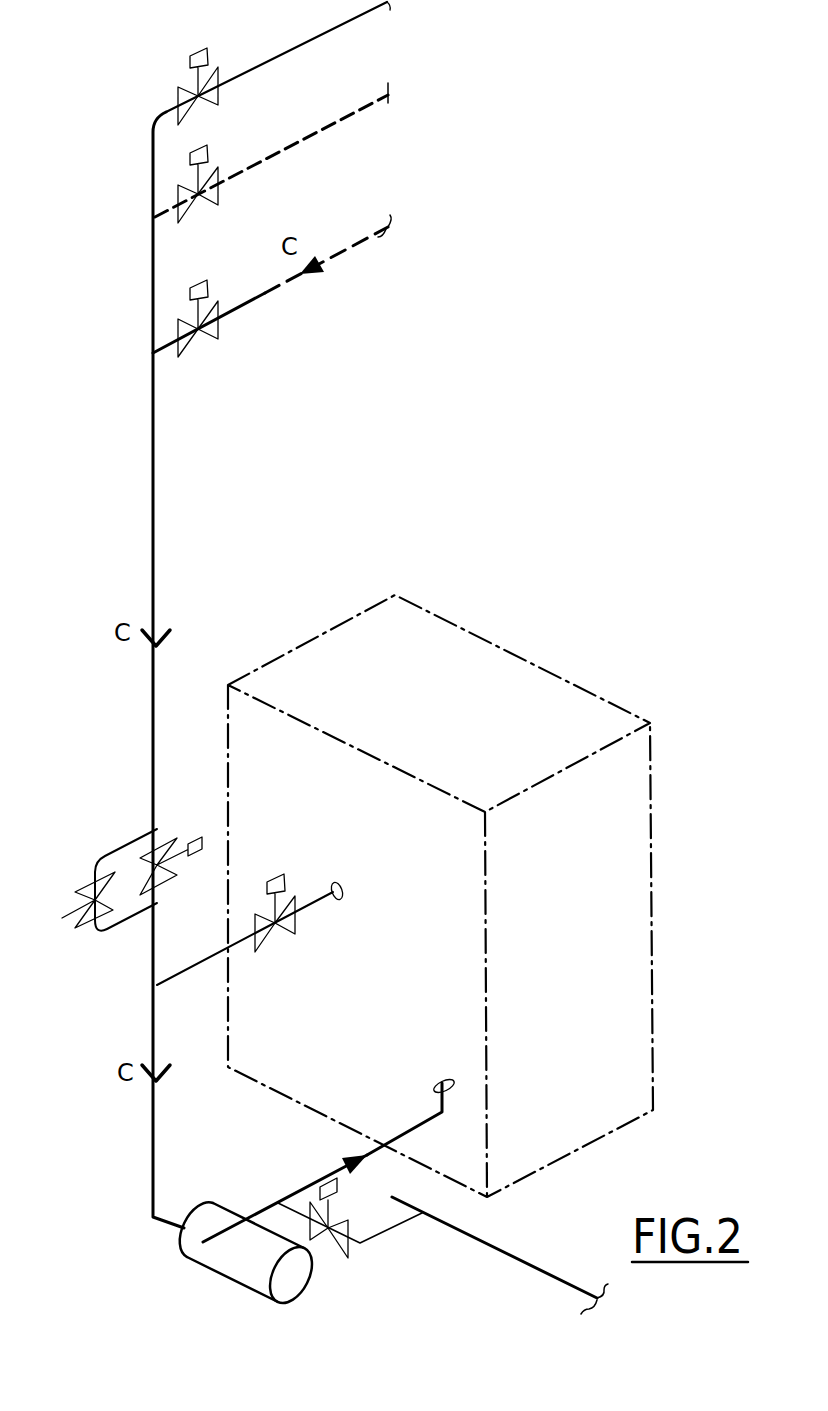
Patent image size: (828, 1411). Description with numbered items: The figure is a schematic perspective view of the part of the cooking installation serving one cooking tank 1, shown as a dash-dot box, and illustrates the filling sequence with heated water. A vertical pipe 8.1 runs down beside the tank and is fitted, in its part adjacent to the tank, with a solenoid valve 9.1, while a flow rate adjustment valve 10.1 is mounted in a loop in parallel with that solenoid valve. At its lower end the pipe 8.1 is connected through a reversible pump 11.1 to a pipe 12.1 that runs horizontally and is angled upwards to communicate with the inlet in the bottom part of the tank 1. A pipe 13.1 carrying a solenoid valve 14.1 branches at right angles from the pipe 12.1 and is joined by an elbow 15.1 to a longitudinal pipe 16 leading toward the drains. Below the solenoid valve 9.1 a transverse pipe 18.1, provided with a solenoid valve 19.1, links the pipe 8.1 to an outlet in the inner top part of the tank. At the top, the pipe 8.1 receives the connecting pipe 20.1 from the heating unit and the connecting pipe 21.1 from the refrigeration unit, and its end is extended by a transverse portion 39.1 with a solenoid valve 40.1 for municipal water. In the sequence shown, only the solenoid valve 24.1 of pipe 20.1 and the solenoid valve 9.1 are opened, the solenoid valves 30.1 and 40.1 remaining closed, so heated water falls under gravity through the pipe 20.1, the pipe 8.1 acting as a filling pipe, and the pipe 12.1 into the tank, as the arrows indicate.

The cooking tank 1 is at (433, 708).
The pipe 8.1 is at (153, 490).
The solenoid valve 9.1 is at (165, 845).
The flow rate adjustment valve 10.1 is at (78, 890).
The reversible pump 11.1 is at (236, 1283).
The pipe 12.1 is at (412, 1128).
The pipe 13.1 is at (282, 1213).
The solenoid valve 14.1 is at (347, 1249).
The elbow 15.1 is at (393, 1228).
The longitudinal pipe 16 is at (510, 1259).
The transverse pipe 18.1 is at (197, 967).
The solenoid valve 19.1 is at (297, 930).
The connecting pipe 20.1 is at (252, 307).
The connecting pipe 21.1 is at (325, 126).
The solenoid valve 24.1 is at (192, 347).
The solenoid valve 30.1 is at (205, 203).
The transverse portion 39.1 is at (310, 36).
The solenoid valve 40.1 is at (217, 97).